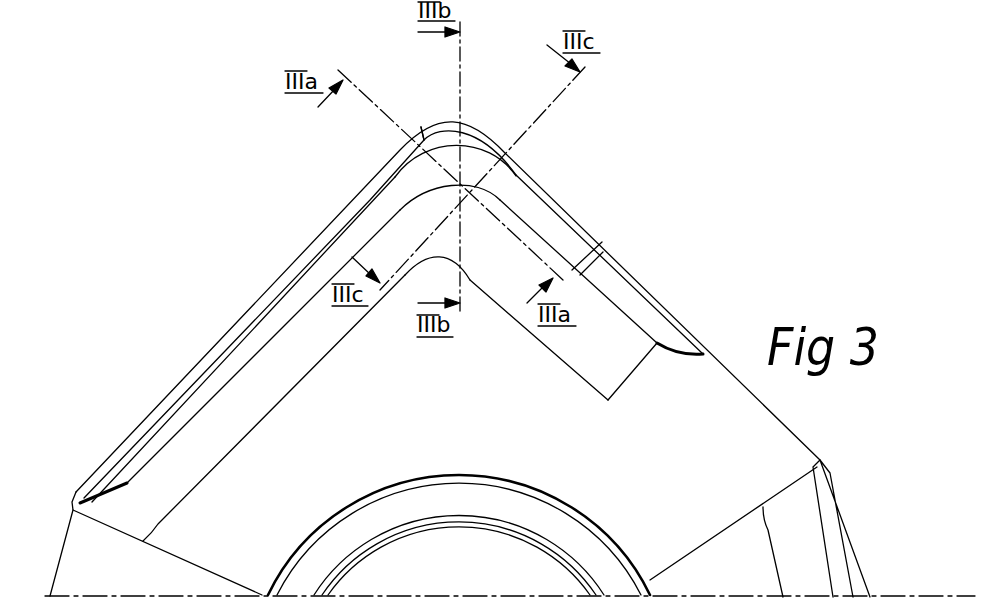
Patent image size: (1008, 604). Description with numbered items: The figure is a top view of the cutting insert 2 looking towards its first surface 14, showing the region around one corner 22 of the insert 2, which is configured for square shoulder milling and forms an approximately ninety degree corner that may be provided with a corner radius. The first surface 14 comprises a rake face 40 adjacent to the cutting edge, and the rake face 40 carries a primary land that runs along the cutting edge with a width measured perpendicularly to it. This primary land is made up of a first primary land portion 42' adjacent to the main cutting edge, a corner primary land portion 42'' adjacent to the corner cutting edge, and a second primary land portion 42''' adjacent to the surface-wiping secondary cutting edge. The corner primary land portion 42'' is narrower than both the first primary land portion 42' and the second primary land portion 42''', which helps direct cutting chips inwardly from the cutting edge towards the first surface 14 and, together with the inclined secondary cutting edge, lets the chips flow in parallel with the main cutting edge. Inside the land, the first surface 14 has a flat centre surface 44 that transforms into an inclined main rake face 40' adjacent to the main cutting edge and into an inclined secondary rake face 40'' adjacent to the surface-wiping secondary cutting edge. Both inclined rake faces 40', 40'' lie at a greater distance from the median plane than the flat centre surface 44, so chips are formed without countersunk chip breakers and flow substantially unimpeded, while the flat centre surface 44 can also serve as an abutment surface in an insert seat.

The cutting insert 2 is at (143, 365).
The first surface 14 is at (290, 403).
The corner 22 is at (440, 123).
The rake face 40 is at (452, 233).
The inclined main rake face 40' is at (263, 346).
The inclined secondary rake face 40'' is at (563, 300).
The first primary land portion 42' is at (304, 312).
The corner primary land portion 42'' is at (469, 117).
The second primary land portion 42''' is at (609, 247).
The flat centre surface 44 is at (305, 504).